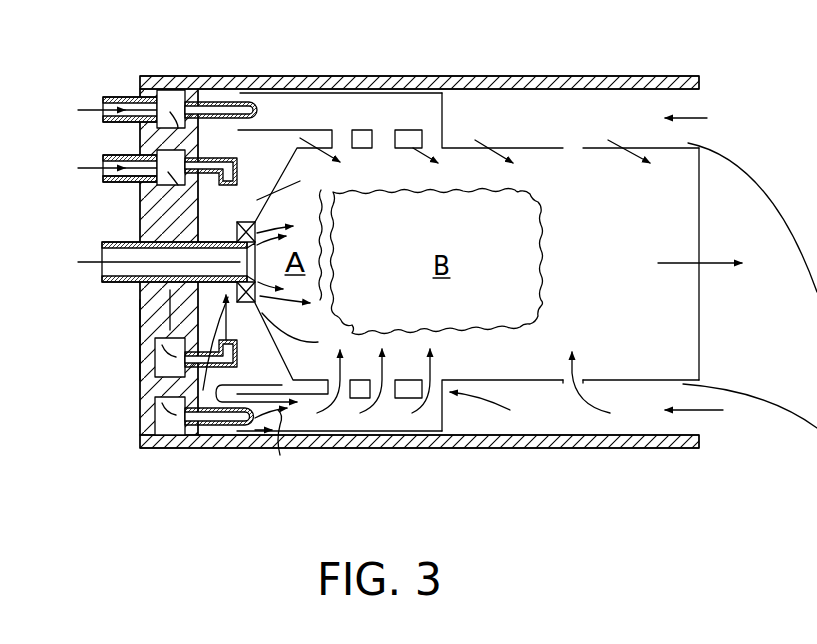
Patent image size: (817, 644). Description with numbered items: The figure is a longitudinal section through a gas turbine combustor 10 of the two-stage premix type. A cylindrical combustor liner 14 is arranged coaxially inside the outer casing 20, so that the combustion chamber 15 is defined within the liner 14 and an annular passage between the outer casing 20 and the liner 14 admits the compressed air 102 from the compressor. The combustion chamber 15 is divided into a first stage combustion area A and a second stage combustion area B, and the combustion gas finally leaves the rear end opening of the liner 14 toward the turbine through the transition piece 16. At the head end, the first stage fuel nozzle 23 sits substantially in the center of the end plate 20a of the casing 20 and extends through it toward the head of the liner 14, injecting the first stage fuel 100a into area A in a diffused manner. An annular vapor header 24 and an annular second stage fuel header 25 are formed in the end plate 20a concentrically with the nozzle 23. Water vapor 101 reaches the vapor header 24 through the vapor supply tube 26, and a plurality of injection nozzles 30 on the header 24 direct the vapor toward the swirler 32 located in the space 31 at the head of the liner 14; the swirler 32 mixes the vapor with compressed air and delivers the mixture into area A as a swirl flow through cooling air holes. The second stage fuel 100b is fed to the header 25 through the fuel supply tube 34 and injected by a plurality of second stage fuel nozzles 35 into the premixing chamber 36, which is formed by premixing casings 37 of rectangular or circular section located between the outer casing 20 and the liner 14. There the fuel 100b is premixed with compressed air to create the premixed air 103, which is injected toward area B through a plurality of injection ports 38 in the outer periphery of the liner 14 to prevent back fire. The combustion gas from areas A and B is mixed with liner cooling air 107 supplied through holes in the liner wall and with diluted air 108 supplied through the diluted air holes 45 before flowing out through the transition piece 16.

The gas turbine combustor 10 is at (650, 70).
The combustor liner 14 is at (660, 147).
The combustion chamber 15 is at (623, 275).
The transition piece 16 is at (772, 200).
The outer casing 20 is at (475, 77).
The end plate 20a is at (157, 333).
The first stage fuel nozzle 23 is at (153, 323).
The vapor header 24 is at (163, 147).
The second stage fuel header 25 is at (178, 93).
The vapor supply tube 26 is at (103, 183).
The injection nozzles 30 is at (237, 163).
The space 31 is at (229, 188).
The swirler 32 is at (260, 230).
The fuel supply tube 34 is at (118, 97).
The second stage fuel nozzles 35 is at (222, 118).
The premixing chamber 36 is at (357, 121).
The premixing casings 37 is at (442, 128).
The injection ports 38 is at (385, 147).
The diluted air holes 45 is at (568, 382).
The first stage fuel 100a is at (128, 283).
The second stage fuel 100b is at (95, 92).
The water vapor 101 is at (100, 168).
The compressed air 102 is at (707, 118).
The premixed air 103 is at (429, 348).
The liner cooling air 107 is at (265, 184).
The diluted air 108 is at (575, 370).